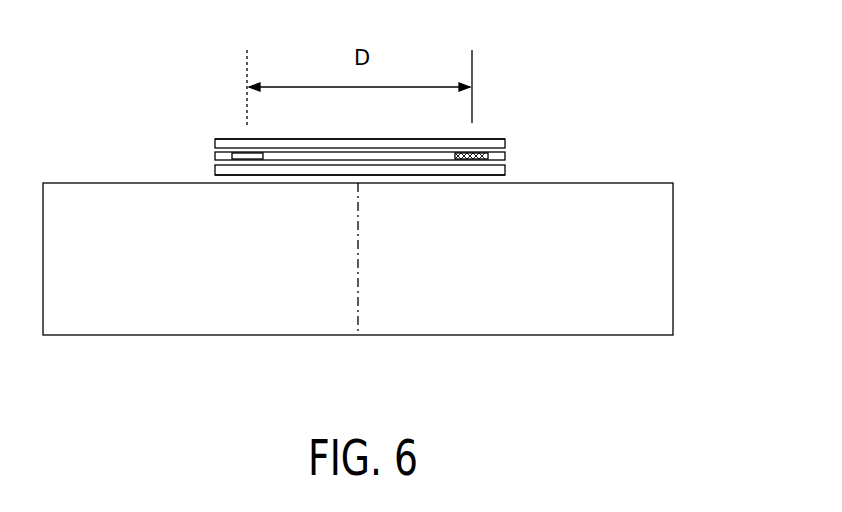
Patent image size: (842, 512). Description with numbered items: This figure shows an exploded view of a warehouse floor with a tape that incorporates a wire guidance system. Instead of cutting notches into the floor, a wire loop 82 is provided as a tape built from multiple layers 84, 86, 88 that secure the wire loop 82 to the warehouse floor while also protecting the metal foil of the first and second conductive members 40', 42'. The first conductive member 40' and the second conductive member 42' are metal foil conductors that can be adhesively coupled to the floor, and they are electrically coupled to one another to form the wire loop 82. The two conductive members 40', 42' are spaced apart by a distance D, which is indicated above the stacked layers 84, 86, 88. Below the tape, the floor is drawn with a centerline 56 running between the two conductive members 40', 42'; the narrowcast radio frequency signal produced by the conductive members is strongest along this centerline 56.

The wire loop 82 is at (433, 64).
The layer 84 is at (360, 139).
The layer 86 is at (323, 149).
The layer 88 is at (287, 175).
The first conductive member 40' is at (220, 125).
The second conductive member 42' is at (504, 125).
The centerline 56 is at (358, 258).